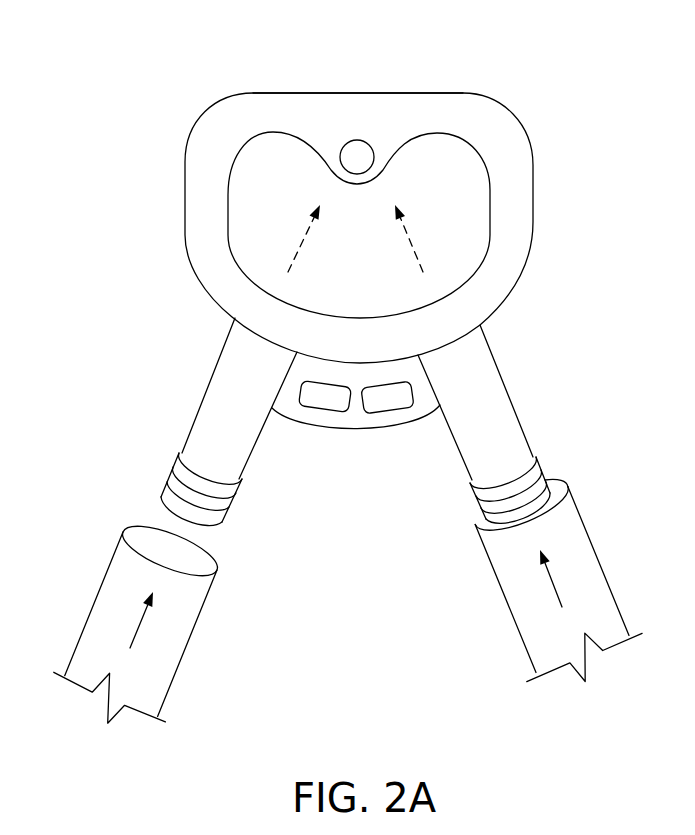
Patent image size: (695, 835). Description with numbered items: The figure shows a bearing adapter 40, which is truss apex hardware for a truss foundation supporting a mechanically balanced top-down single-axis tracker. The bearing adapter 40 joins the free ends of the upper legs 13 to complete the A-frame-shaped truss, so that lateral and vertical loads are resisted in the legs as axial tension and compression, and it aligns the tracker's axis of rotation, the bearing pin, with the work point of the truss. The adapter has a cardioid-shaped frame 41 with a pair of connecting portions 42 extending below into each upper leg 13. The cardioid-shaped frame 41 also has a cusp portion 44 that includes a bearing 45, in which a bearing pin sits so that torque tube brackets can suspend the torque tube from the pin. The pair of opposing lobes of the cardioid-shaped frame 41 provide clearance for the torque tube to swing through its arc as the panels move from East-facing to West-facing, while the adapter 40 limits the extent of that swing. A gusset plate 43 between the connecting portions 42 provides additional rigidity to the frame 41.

The bearing adapter 40 is at (568, 53).
The cardioid-shaped frame 41 is at (535, 193).
The connecting portions 42 is at (208, 375).
The gusset plate 43 is at (357, 428).
The cusp portion 44 is at (365, 108).
The bearing 45 is at (345, 143).
The upper legs 13 is at (92, 605).